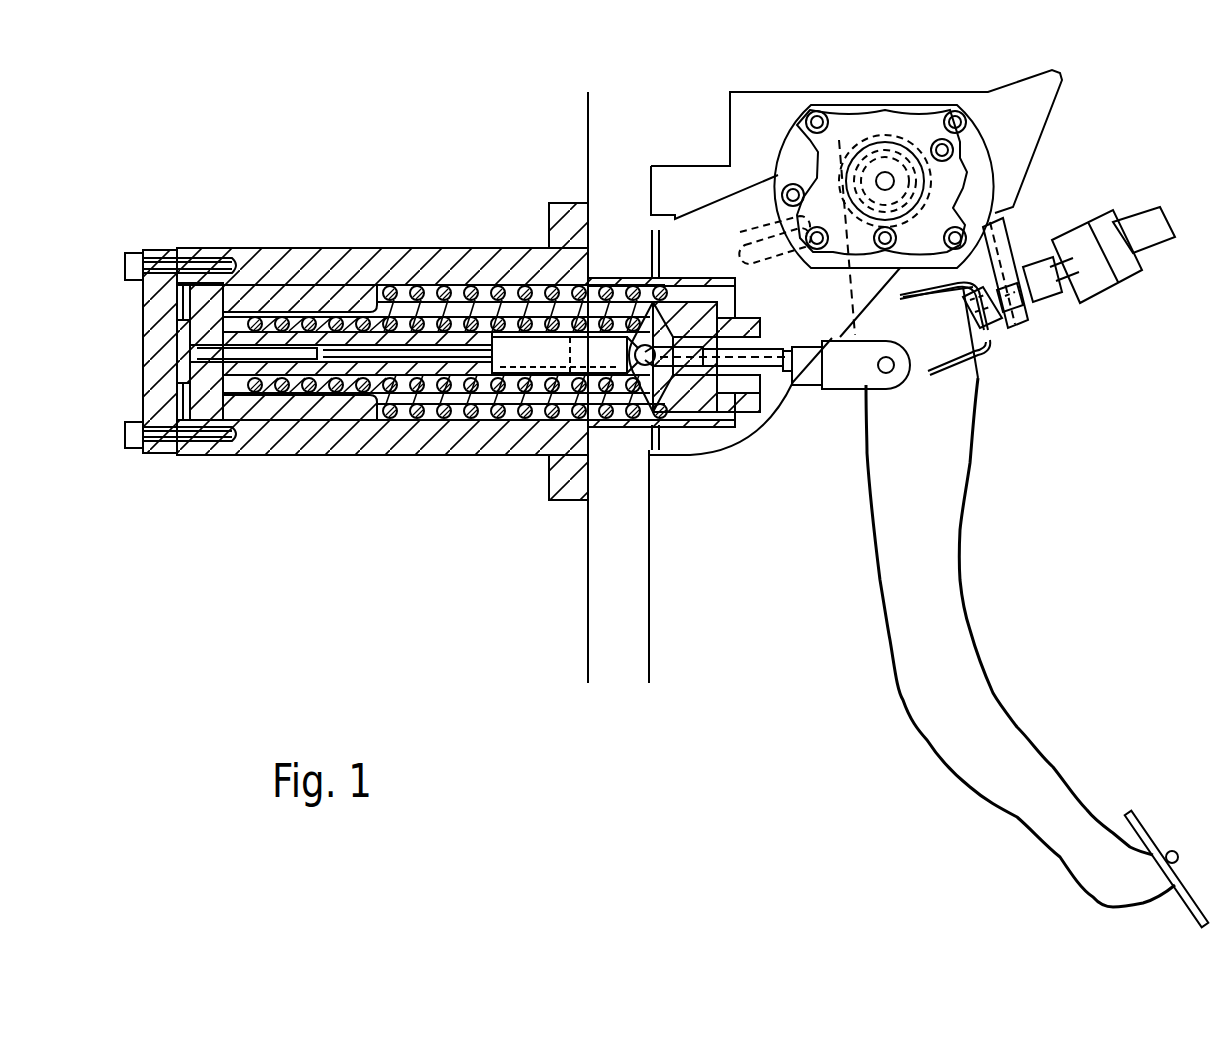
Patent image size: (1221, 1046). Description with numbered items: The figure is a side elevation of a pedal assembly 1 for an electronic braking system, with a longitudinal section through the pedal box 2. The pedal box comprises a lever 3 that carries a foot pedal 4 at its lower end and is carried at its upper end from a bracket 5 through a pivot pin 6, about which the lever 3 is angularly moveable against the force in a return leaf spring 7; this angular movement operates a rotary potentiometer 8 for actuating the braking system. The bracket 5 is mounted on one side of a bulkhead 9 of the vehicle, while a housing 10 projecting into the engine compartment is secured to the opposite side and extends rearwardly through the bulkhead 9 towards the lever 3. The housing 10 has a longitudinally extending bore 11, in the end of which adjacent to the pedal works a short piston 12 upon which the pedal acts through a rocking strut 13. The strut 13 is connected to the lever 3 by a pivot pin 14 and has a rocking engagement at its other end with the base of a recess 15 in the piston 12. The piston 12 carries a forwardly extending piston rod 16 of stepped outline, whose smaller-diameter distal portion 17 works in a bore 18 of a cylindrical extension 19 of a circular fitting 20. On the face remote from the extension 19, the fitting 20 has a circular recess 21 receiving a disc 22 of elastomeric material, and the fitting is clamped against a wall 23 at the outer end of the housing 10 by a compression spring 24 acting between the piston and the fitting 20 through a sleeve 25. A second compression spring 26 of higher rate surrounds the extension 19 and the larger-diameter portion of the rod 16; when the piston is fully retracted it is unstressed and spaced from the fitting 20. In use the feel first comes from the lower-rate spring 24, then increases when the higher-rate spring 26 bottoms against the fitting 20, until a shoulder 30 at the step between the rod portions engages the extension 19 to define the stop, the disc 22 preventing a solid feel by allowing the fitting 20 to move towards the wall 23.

The pedal assembly 1 is at (936, 548).
The pedal box 2 is at (912, 133).
The lever 3 is at (960, 653).
The foot pedal 4 is at (1145, 825).
The bracket 5 is at (795, 137).
The pivot pin 6 is at (885, 172).
The return leaf spring 7 is at (742, 232).
The rotary potentiometer 8 is at (870, 162).
The bulkhead 9 is at (612, 643).
The housing 10 is at (320, 260).
The bore 11 is at (423, 425).
The piston 12 is at (700, 410).
The rocking strut 13 is at (833, 385).
The pivot pin 14 is at (885, 373).
The recess 15 is at (667, 412).
The piston rod 16 is at (525, 362).
The distal portion 17 is at (362, 360).
The bore 18 is at (258, 362).
The cylindrical extension 19 is at (303, 330).
The circular fitting 20 is at (202, 407).
The circular recess 21 is at (187, 412).
The disc 22 is at (180, 318).
The wall 23 is at (160, 258).
The compression spring 24 is at (508, 300).
The sleeve 25 is at (367, 292).
The second compression spring 26 is at (456, 305).
The shoulder 30 is at (473, 373).